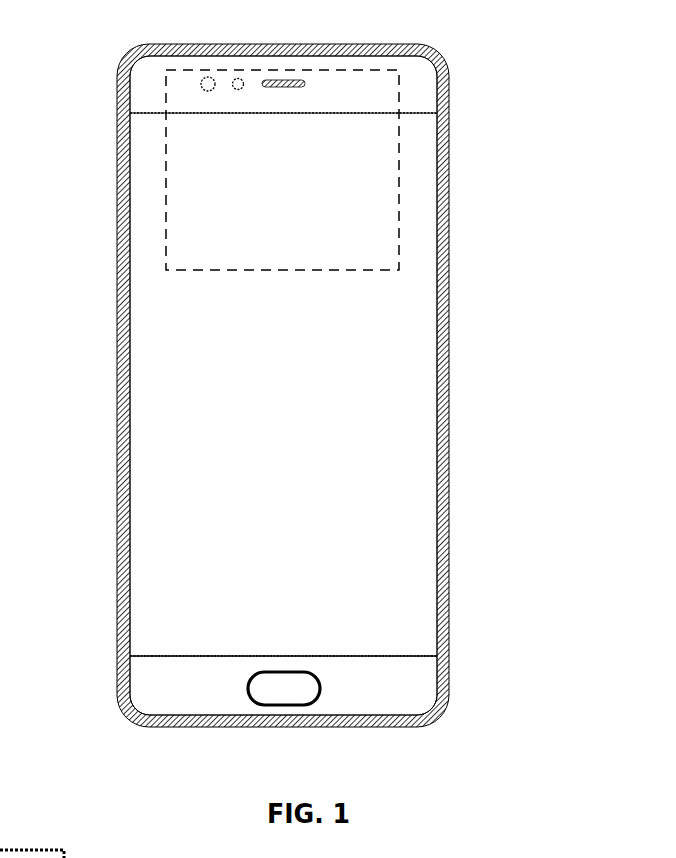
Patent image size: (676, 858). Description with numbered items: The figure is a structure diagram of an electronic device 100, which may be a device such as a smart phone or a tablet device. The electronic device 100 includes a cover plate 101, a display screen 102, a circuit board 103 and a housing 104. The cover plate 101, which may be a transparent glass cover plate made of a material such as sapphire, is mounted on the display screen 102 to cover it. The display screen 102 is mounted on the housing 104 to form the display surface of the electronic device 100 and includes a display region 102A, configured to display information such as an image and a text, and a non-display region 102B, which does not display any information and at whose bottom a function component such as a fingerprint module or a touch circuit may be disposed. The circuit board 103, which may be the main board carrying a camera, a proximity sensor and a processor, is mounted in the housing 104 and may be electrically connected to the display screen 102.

The electronic device 100 is at (302, 368).
The cover plate 101 is at (147, 73).
The display screen 102 is at (413, 120).
The display region 102A is at (413, 398).
The non-display region 102B is at (420, 690).
The circuit board 103 is at (398, 248).
The housing 104 is at (443, 558).